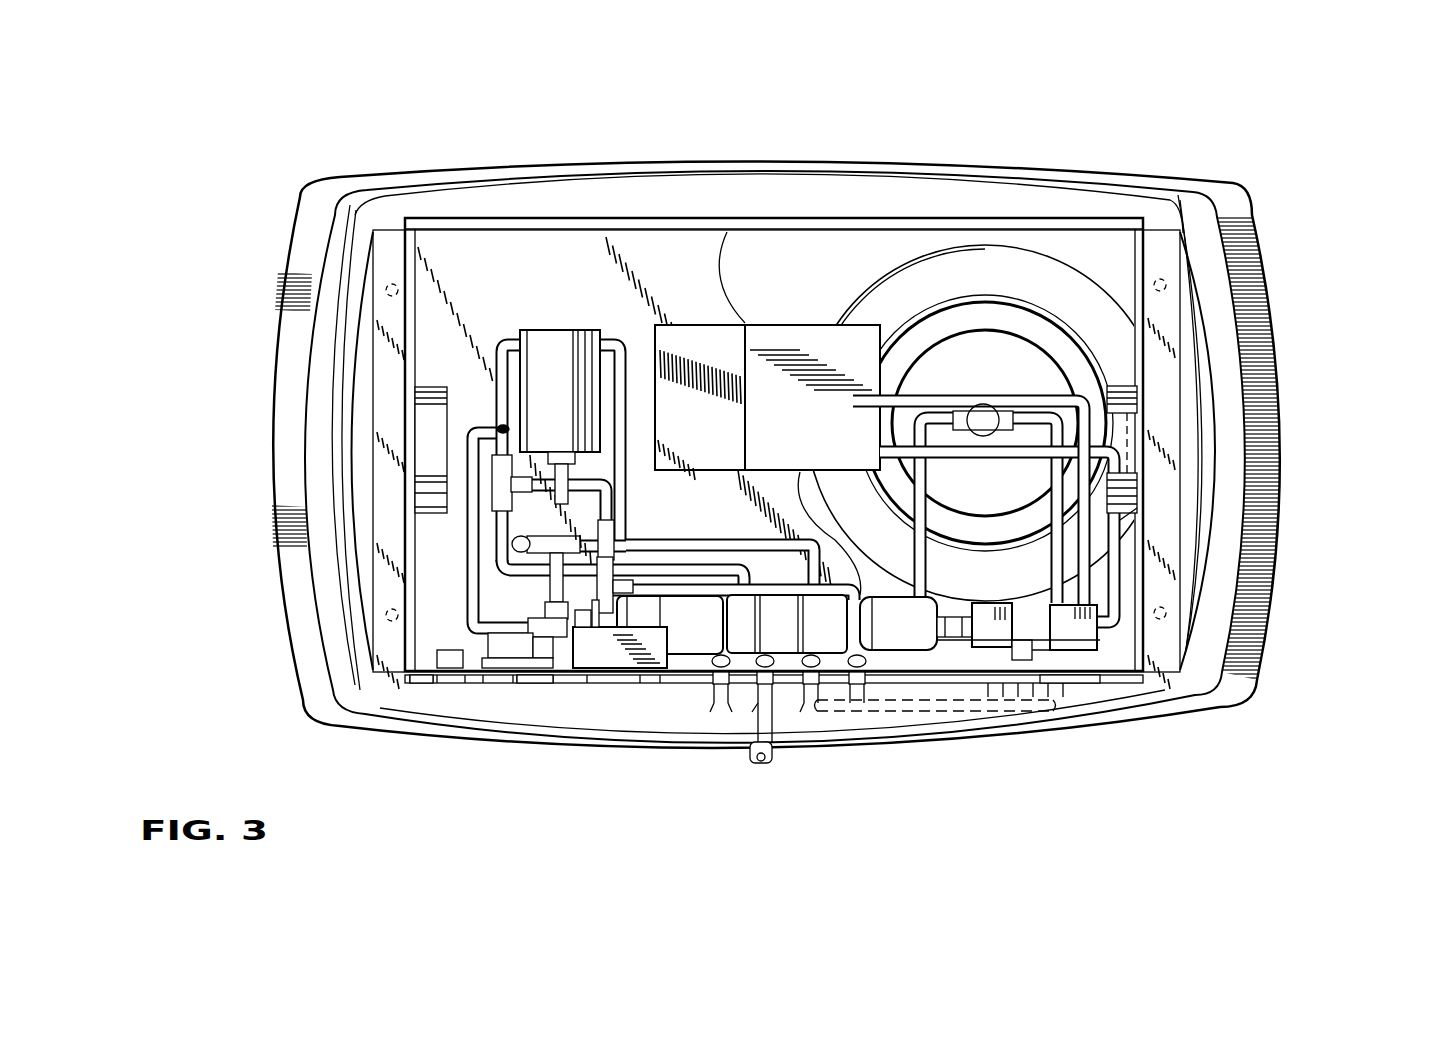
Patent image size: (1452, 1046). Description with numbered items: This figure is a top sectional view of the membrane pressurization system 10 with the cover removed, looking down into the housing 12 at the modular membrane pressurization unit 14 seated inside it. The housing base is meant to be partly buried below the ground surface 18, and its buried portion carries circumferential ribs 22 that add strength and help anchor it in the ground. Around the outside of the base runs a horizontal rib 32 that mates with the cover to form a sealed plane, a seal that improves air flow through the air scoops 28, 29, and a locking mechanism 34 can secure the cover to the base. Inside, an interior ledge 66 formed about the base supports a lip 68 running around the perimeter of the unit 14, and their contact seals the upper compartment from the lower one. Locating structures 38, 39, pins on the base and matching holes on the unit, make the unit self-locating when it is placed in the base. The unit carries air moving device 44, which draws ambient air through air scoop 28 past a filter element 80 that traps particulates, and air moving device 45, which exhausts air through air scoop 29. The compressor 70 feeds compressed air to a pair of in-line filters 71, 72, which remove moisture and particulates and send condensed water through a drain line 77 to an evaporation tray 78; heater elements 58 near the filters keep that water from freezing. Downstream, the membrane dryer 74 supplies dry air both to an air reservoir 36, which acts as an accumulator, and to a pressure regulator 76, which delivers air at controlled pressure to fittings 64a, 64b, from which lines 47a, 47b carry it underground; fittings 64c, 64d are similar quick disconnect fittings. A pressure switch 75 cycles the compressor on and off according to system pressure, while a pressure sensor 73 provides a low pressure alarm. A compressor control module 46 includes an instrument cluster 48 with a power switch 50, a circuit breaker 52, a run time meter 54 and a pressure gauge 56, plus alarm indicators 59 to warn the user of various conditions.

The membrane pressurization system 10 is at (212, 120).
The housing 12 is at (815, 160).
The modular membrane pressurization unit 14 is at (519, 208).
The ground surface 18 is at (226, 560).
The circumferential ribs 22 is at (1253, 247).
The air scoop 28 is at (1215, 457).
The air scoop 29 is at (337, 418).
The horizontal rib 32 is at (1182, 213).
The locking mechanism 34 is at (758, 768).
The air reservoir 36 is at (1040, 284).
The locating structure 38 is at (385, 606).
The locating structure 39 is at (388, 613).
The air moving device 44 is at (1117, 380).
The air moving device 45 is at (445, 515).
The compressor control module 46 is at (935, 690).
The line 47a is at (727, 697).
The line 47b is at (747, 690).
The instrument cluster 48 is at (517, 708).
The power switch 50 is at (448, 688).
The circuit breaker 52 is at (537, 688).
The run time meter 54 is at (497, 688).
The pressure gauge 56 is at (620, 688).
The heater elements 58 is at (1077, 660).
The alarm indicators 59 is at (978, 690).
The fitting 64a is at (718, 695).
The fitting 64b is at (777, 690).
The fitting 64c is at (800, 690).
The fitting 64d is at (853, 690).
The interior ledge 66 is at (1013, 198).
The lip 68 is at (383, 241).
The compressor 70 is at (716, 436).
The in-line filter 71 is at (1005, 605).
The in-line filter 72 is at (1065, 598).
The pressure sensor 73 is at (898, 652).
The membrane dryer 74 is at (702, 592).
The pressure switch 75 is at (950, 645).
The pressure regulator 76 is at (548, 330).
The drain line 77 is at (958, 393).
The evaporation tray 78 is at (821, 436).
The filter element 80 is at (1130, 422).